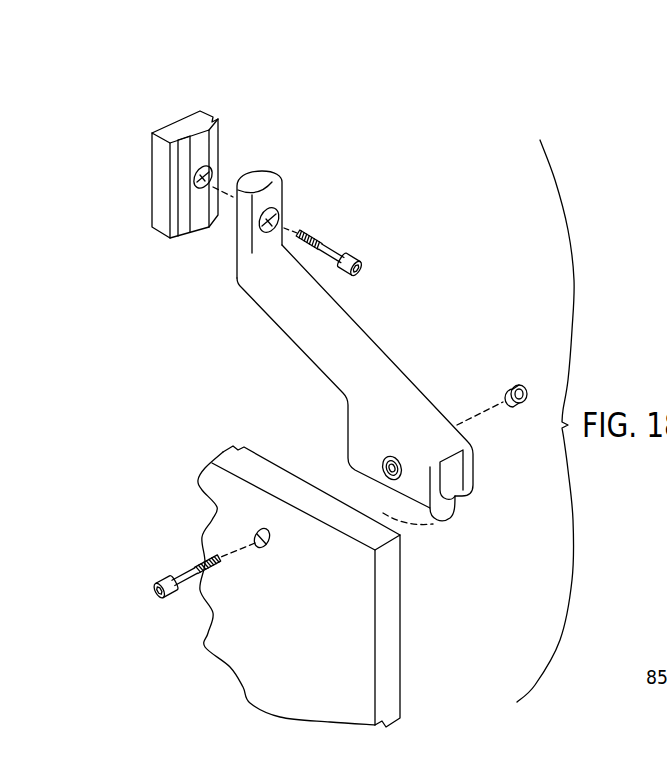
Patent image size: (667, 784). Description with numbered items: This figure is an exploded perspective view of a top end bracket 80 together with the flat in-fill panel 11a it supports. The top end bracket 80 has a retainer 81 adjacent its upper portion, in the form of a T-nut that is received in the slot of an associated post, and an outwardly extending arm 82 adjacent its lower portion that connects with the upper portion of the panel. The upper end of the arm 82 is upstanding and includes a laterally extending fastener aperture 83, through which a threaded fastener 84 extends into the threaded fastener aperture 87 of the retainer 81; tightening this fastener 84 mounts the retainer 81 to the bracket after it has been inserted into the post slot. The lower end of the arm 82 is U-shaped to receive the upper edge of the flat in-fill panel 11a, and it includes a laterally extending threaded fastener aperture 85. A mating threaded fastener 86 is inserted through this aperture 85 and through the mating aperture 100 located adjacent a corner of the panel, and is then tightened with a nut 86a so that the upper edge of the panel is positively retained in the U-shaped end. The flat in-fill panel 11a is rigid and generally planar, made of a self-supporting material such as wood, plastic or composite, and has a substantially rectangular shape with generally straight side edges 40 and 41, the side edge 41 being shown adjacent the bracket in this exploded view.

The retainer 81 is at (198, 117).
The threaded fastener aperture 87 is at (212, 176).
The fastener aperture 83 is at (277, 213).
The threaded fastener 84 is at (363, 257).
The top end bracket 80 is at (385, 342).
The arm 82 is at (283, 323).
The nut 86a is at (515, 381).
The threaded fastener aperture 85 is at (383, 478).
The side edge 40 is at (263, 453).
The side edge 41 is at (394, 653).
The mating aperture 100 is at (258, 552).
The threaded fastener 86 is at (180, 568).
The flat in-fill panel 11a is at (263, 693).